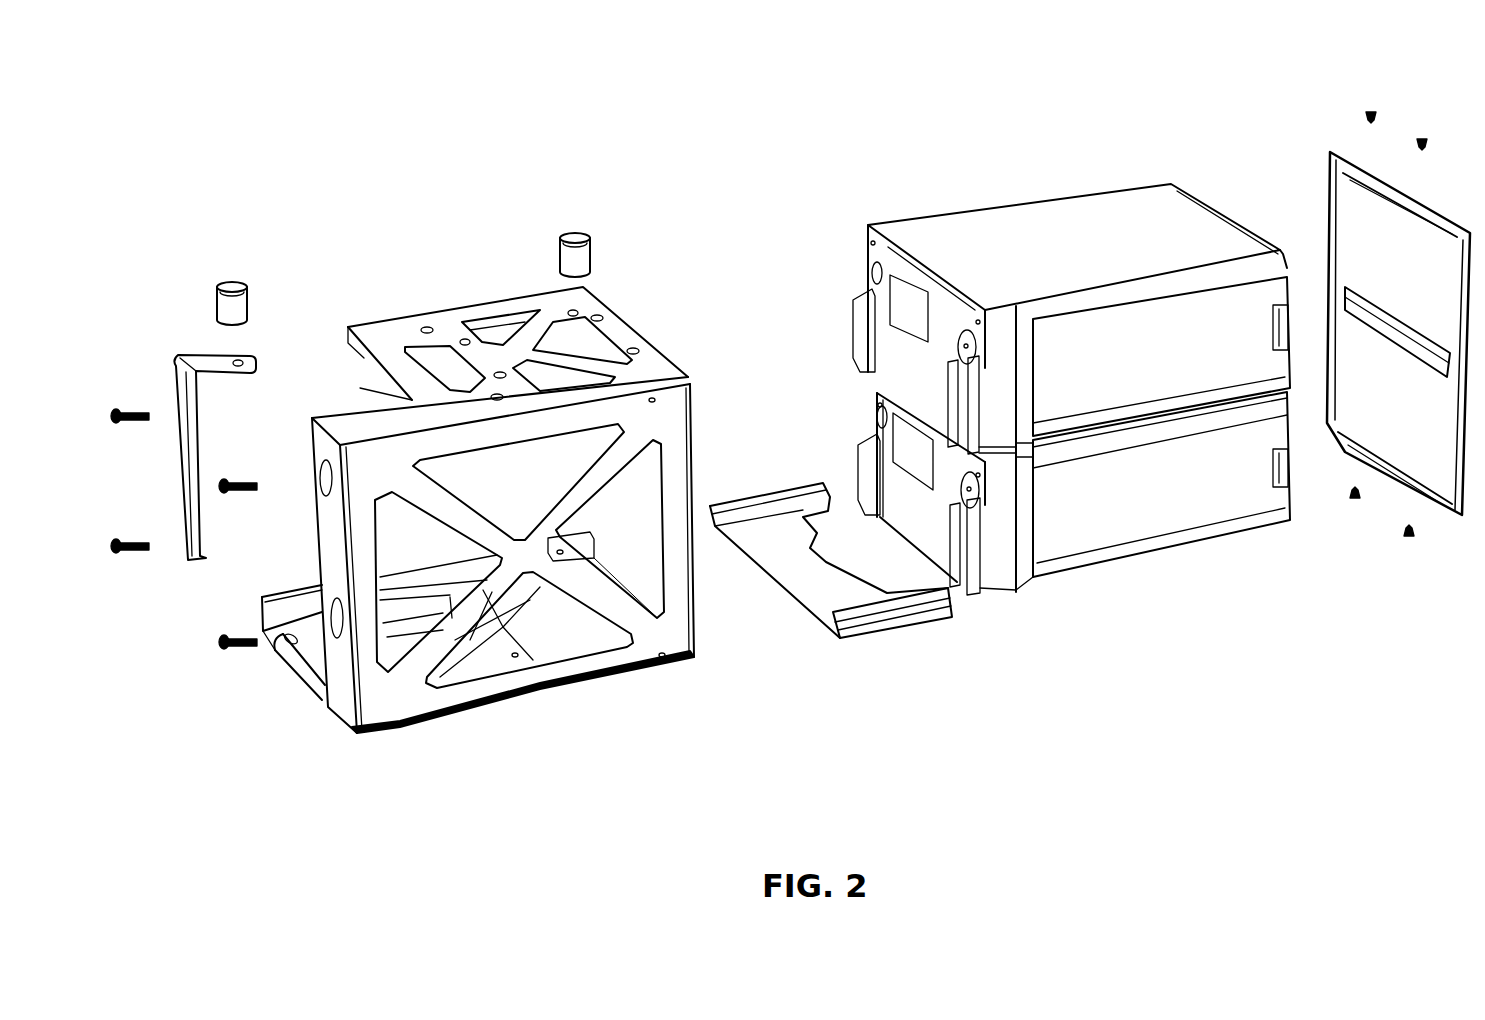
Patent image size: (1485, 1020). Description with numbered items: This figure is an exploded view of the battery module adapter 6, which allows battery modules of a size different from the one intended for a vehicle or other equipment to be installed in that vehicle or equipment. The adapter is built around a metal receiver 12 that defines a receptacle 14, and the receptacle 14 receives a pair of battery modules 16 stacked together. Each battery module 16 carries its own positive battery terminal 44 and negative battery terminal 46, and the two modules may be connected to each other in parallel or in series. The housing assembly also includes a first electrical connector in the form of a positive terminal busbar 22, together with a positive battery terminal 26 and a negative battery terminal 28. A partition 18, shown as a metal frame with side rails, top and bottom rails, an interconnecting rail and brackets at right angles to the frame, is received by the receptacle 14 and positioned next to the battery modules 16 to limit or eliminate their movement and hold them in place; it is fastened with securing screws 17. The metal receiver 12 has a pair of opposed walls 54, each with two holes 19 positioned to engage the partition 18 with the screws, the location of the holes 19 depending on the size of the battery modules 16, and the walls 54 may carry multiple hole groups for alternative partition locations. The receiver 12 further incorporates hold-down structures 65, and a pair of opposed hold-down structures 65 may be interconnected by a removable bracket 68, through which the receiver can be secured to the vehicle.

The battery module adapter 6 is at (823, 92).
The metal receiver 12 is at (682, 444).
The receptacle 14 is at (338, 391).
The battery module 16 is at (1071, 389).
The fastener screw 17 is at (1365, 175).
The partition 18 is at (1328, 178).
The holes 19 is at (598, 316).
The positive terminal busbar 22 is at (178, 359).
The positive battery terminal 26 is at (224, 283).
The negative battery terminal 28 is at (567, 230).
The positive battery terminal 44 is at (872, 276).
The negative battery terminal 46 is at (962, 349).
The opposed walls 54 is at (358, 388).
The hold-down structures 65 is at (303, 685).
The removable bracket 68 is at (793, 602).